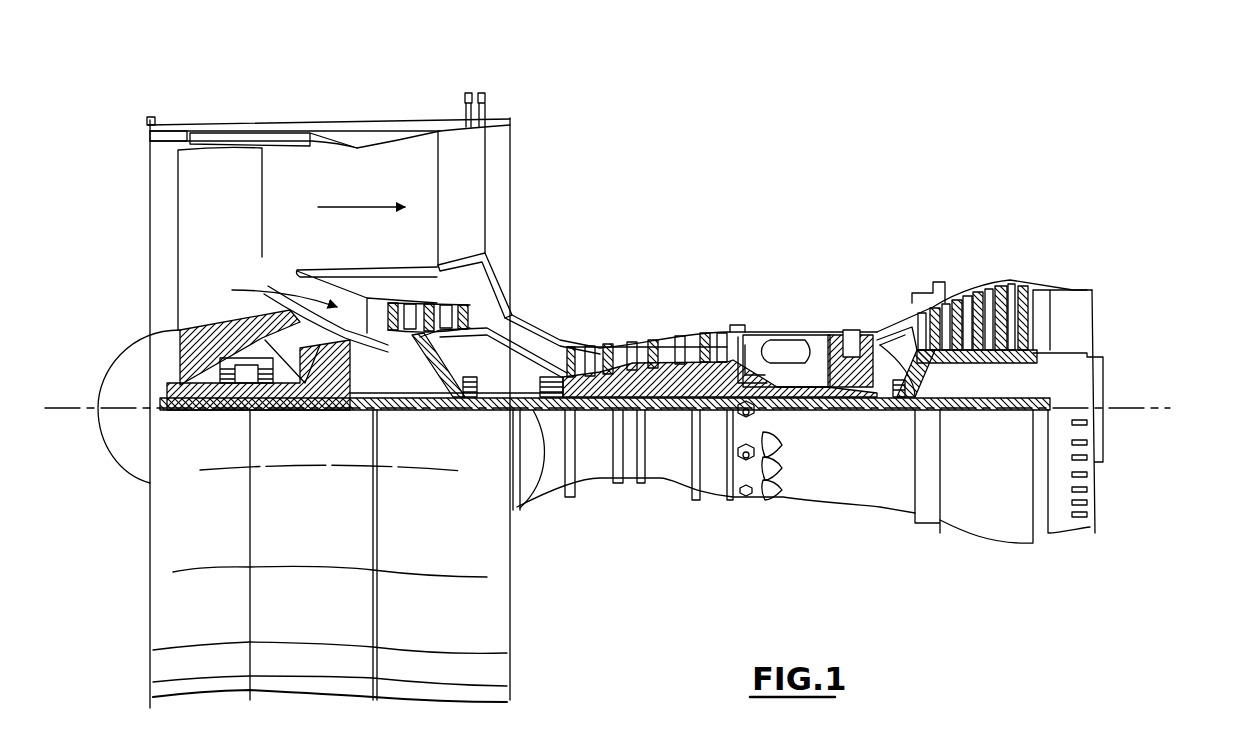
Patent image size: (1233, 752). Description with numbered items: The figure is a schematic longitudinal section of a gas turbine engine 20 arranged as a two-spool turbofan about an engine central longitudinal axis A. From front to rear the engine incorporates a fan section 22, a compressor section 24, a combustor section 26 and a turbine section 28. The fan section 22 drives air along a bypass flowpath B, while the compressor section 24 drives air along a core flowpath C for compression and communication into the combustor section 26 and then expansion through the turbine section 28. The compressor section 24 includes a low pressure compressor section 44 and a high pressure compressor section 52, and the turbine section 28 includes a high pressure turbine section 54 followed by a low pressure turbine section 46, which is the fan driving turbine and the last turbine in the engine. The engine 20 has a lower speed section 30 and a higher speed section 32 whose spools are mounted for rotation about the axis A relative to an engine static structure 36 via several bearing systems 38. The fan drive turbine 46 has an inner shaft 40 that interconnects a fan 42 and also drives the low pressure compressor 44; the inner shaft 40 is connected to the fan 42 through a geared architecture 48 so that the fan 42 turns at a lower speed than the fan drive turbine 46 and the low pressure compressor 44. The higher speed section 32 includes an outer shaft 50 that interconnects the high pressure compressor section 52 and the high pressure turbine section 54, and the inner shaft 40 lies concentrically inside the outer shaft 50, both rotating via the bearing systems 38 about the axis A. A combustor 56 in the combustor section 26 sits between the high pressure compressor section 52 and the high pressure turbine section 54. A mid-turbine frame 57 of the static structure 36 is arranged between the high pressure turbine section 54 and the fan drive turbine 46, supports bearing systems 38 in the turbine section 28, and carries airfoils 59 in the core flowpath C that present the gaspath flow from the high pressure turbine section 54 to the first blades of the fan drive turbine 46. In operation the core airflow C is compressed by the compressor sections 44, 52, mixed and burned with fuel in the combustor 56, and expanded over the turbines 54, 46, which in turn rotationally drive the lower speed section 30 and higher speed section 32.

The gas turbine engine 20 is at (793, 175).
The fan section 22 is at (262, 118).
The compressor section 24 is at (708, 332).
The combustor section 26 is at (812, 319).
The turbine section 28 is at (989, 377).
The lower speed section 30 is at (670, 412).
The higher speed section 32 is at (707, 377).
The engine static structure 36 is at (710, 499).
The bearing systems 38 is at (250, 383).
The inner shaft 40 is at (540, 483).
The fan 42 is at (234, 253).
The low pressure compressor section 44 is at (447, 310).
The low pressure turbine section 46 is at (980, 300).
The geared architecture 48 is at (338, 393).
The outer shaft 50 is at (787, 383).
The high pressure compressor section 52 is at (640, 347).
The high pressure turbine section 54 is at (848, 327).
The combustor 56 is at (787, 353).
The mid-turbine frame 57 is at (895, 313).
The airfoils 59 is at (910, 363).
The engine central longitudinal axis A is at (1187, 408).
The bypass flowpath B is at (347, 208).
The core flowpath C is at (275, 293).